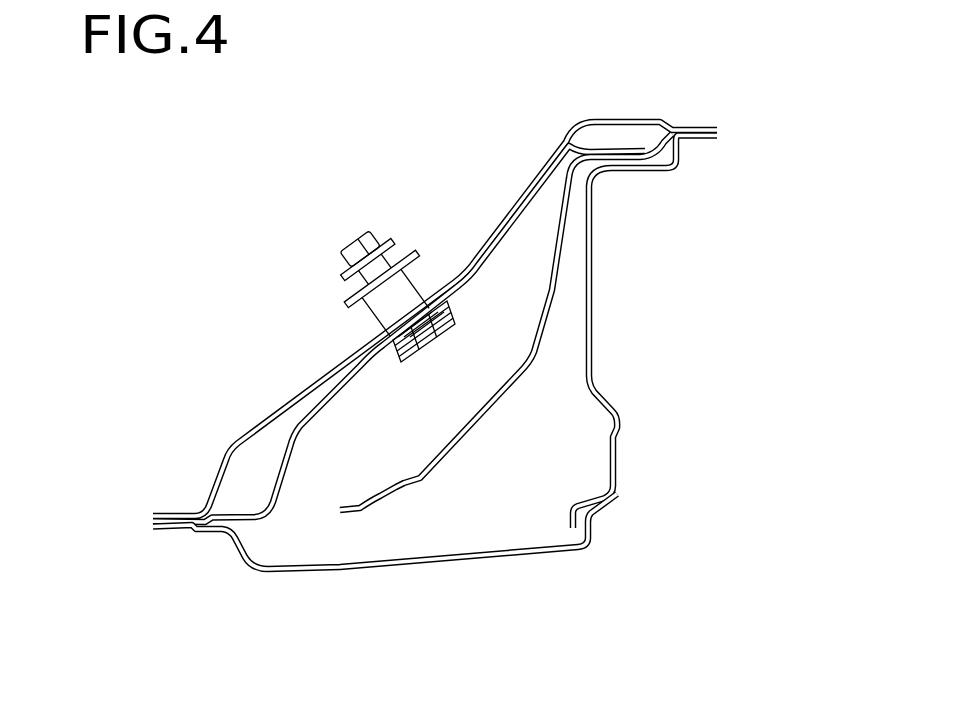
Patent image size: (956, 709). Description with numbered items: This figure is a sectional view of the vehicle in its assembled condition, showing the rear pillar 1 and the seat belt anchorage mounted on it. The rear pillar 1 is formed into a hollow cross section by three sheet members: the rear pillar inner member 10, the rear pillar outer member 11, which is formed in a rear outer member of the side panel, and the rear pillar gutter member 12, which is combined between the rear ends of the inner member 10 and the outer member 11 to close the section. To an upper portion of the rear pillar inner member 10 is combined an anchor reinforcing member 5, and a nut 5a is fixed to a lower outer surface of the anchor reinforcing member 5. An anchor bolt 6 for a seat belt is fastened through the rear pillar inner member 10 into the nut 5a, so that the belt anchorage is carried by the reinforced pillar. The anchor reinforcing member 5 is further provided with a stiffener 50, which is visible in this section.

The rear pillar 1 is at (435, 380).
The anchor reinforcing member 5 is at (337, 397).
The nut 5a is at (412, 354).
The anchor bolt 6 is at (362, 247).
The rear pillar inner member 10 is at (297, 407).
The rear pillar outer member 11 is at (428, 563).
The rear pillar gutter member 12 is at (586, 294).
The stiffener 50 is at (472, 430).